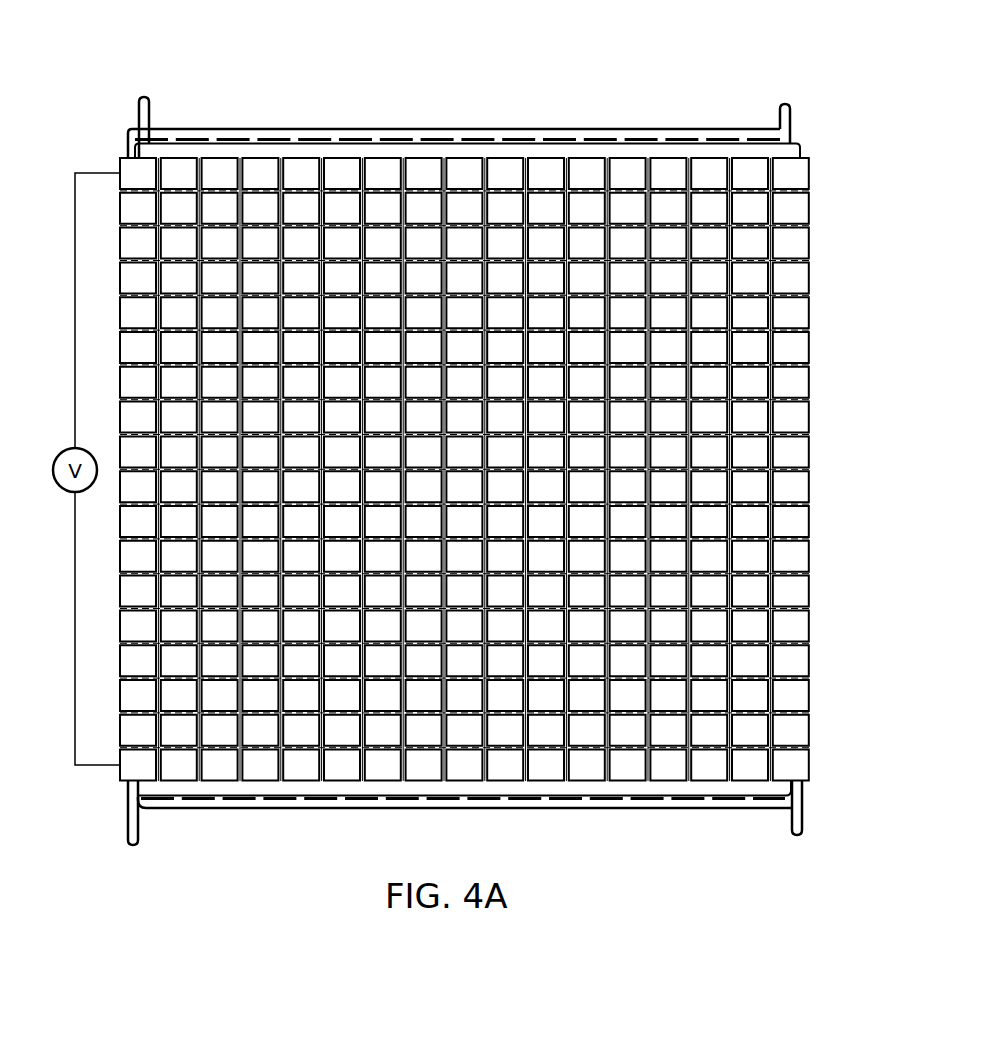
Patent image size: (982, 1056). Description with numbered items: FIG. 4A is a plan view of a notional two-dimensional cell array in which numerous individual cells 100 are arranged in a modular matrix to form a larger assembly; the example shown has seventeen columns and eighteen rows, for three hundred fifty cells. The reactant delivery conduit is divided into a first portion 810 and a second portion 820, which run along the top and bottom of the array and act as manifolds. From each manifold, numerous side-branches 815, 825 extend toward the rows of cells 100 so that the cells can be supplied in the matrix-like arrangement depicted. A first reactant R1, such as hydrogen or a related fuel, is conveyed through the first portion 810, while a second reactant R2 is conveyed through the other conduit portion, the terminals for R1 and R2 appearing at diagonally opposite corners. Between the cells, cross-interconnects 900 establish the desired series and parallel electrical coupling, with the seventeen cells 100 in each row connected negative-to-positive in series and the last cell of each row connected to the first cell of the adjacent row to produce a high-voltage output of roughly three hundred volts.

The cell 100 is at (118, 163).
The cross-interconnect 900 is at (158, 177).
The first portion of reactant delivery conduit 810 is at (633, 129).
The side-branch 815 is at (590, 140).
The second portion of reactant delivery conduit 820 is at (543, 810).
The side-branch 825 is at (618, 797).
The first reactant R1 is at (133, 897).
The second reactant R2 is at (797, 889).